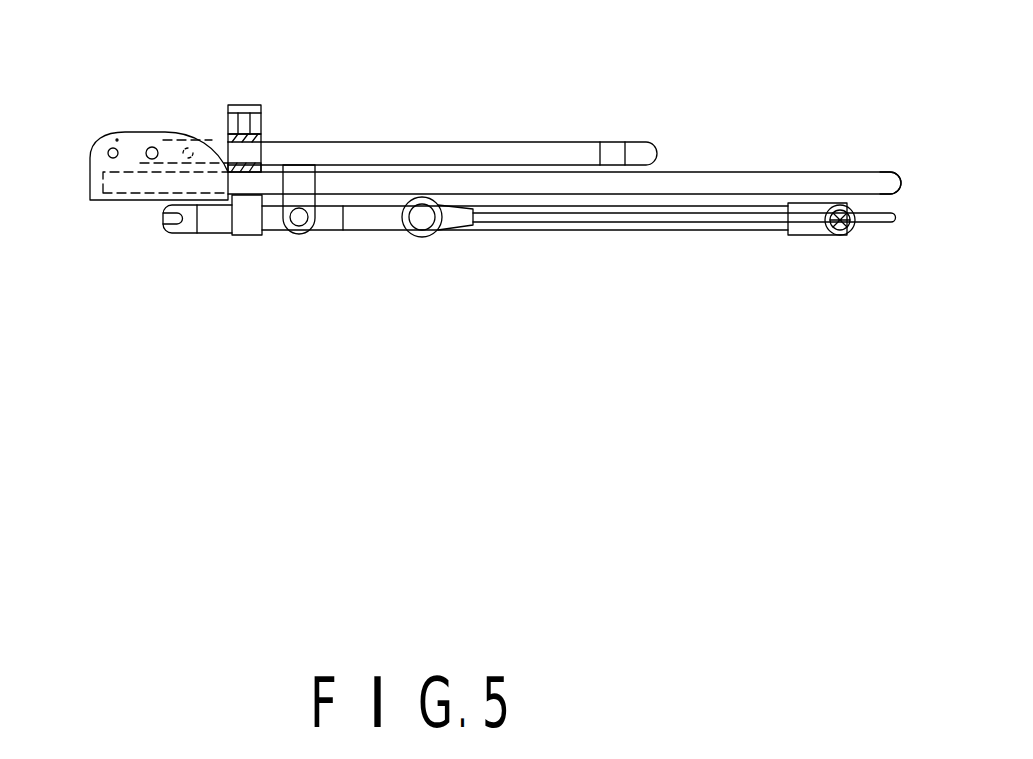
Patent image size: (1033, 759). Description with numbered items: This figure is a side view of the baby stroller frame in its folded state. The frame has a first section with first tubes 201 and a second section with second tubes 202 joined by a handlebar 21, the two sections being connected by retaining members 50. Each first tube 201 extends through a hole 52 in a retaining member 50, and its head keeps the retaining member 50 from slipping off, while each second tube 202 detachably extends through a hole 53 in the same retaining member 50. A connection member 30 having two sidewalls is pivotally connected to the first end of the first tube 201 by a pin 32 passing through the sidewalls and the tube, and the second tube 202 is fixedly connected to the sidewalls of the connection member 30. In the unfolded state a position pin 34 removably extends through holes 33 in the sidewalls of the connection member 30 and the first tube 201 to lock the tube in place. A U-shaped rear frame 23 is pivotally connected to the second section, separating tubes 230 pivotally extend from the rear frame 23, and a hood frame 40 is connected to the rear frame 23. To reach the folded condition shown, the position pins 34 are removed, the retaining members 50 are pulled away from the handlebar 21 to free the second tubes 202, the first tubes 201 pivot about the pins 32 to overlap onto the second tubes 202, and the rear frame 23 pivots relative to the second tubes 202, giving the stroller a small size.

The handlebar 21 is at (900, 183).
The first tube 201 is at (432, 150).
The second tube 202 is at (693, 173).
The U-shaped rear frame 23 is at (575, 228).
The separating tube 230 is at (222, 227).
The connection member 30 is at (102, 203).
The pin 32 is at (153, 148).
The hole 33 is at (110, 149).
The position pin 34 is at (117, 135).
The hood frame 40 is at (683, 222).
The retaining member 50 is at (247, 105).
The hole 52 is at (258, 135).
The hole 53 is at (250, 122).